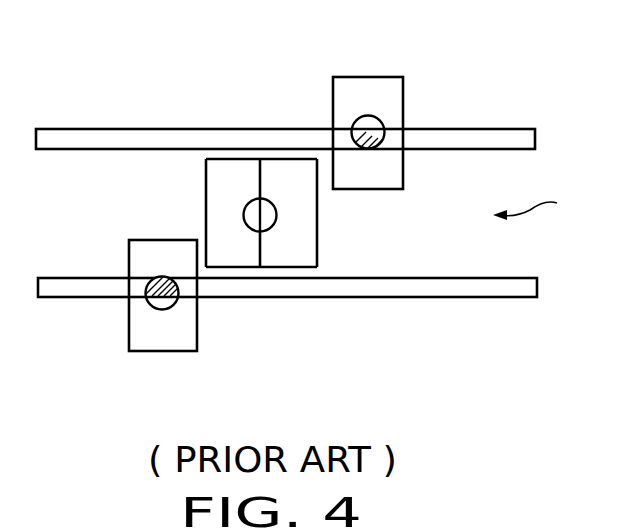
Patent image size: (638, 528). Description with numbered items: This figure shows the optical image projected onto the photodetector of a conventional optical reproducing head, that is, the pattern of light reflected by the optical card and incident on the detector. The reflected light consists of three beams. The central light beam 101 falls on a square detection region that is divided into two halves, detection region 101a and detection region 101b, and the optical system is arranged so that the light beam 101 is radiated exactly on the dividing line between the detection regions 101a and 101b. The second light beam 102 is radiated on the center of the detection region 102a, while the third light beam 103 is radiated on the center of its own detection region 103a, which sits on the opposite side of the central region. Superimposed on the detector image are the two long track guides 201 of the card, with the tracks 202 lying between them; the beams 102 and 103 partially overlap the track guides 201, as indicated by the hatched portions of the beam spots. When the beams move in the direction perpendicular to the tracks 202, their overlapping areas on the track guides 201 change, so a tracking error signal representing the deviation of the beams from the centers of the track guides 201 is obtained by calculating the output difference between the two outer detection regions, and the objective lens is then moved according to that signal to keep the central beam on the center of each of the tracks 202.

The light beam 101 is at (277, 212).
The detection region 101a is at (227, 159).
The detection region 101b is at (278, 268).
The light beam 102 is at (381, 119).
The detection region 102a is at (368, 77).
The light beam 103 is at (150, 308).
The second support block 103a is at (163, 351).
The track guides 201 is at (535, 139).
The tracks 202 is at (550, 210).